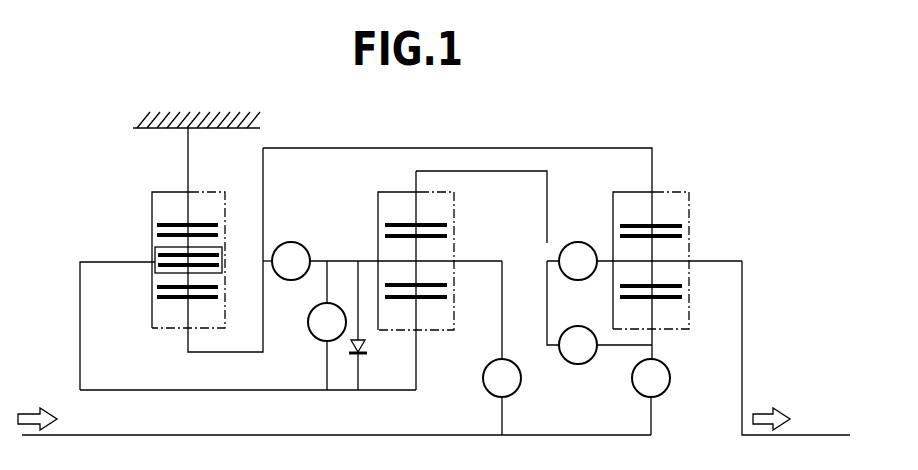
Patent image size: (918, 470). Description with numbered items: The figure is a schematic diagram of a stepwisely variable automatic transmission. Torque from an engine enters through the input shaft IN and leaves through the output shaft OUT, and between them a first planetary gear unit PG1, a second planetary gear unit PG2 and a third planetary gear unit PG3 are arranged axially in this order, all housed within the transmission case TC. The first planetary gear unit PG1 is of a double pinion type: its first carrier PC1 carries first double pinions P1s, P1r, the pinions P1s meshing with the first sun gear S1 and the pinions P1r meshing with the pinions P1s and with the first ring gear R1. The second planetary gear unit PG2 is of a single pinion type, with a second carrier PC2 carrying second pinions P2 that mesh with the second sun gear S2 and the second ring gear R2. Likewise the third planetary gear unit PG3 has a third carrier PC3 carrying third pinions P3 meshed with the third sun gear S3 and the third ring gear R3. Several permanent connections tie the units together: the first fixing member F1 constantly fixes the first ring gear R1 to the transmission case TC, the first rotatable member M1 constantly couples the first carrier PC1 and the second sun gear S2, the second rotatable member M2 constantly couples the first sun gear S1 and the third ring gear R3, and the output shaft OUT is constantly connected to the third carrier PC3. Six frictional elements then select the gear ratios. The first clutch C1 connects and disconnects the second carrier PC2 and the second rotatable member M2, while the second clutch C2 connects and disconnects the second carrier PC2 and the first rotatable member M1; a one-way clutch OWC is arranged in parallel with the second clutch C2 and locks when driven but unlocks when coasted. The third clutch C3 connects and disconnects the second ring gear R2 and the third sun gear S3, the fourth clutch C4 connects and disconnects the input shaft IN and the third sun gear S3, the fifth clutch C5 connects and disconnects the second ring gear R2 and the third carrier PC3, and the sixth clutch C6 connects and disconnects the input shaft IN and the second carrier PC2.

The transmission case TC is at (158, 129).
The first fixing member F1 is at (190, 143).
The first rotatable member M1 is at (210, 391).
The second rotatable member M2 is at (580, 149).
The first planetary gear unit PG1 is at (166, 185).
The second planetary gear unit PG2 is at (381, 187).
The third planetary gear unit PG3 is at (718, 172).
The first ring gear R1 is at (163, 225).
The first double pinion (ring-side) P1r is at (160, 236).
The first carrier PC1 is at (155, 249).
The first double pinion (sun-side) P1s is at (165, 287).
The first sun gear S1 is at (166, 297).
The second ring gear R2 is at (428, 225).
The second pinions P2 is at (432, 237).
The second carrier PC2 is at (432, 262).
The second sun gear S2 is at (428, 298).
The third ring gear R3 is at (665, 226).
The third pinions P3 is at (668, 287).
The third carrier PC3 is at (668, 262).
The third sun gear S3 is at (668, 297).
The first clutch C1 is at (286, 261).
The second clutch C2 is at (405, 325).
The third clutch C3 is at (605, 345).
The fourth clutch C4 is at (651, 397).
The fifth clutch C5 is at (644, 293).
The sixth clutch C6 is at (502, 348).
The one-way clutch OWC is at (381, 325).
The input shaft IN is at (73, 434).
The output shaft OUT is at (805, 434).